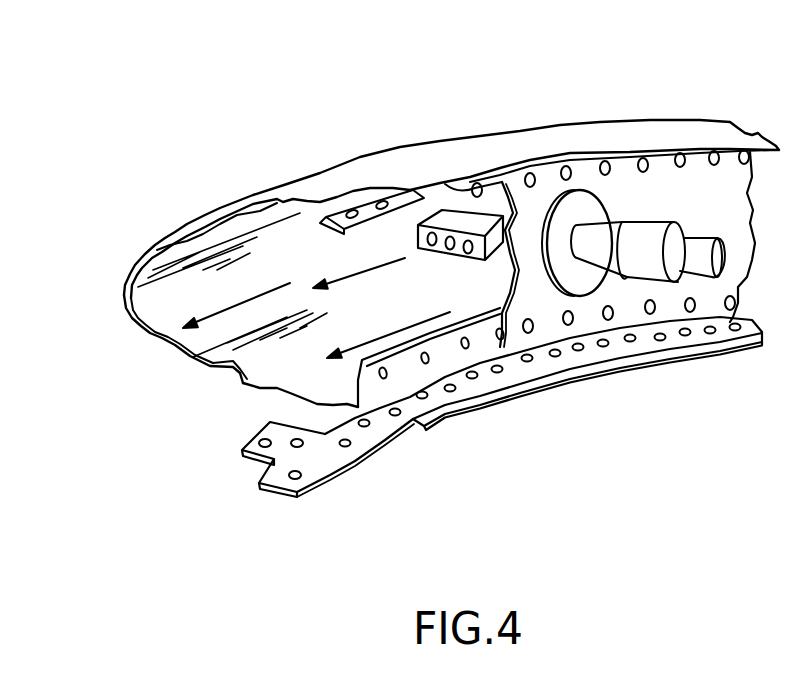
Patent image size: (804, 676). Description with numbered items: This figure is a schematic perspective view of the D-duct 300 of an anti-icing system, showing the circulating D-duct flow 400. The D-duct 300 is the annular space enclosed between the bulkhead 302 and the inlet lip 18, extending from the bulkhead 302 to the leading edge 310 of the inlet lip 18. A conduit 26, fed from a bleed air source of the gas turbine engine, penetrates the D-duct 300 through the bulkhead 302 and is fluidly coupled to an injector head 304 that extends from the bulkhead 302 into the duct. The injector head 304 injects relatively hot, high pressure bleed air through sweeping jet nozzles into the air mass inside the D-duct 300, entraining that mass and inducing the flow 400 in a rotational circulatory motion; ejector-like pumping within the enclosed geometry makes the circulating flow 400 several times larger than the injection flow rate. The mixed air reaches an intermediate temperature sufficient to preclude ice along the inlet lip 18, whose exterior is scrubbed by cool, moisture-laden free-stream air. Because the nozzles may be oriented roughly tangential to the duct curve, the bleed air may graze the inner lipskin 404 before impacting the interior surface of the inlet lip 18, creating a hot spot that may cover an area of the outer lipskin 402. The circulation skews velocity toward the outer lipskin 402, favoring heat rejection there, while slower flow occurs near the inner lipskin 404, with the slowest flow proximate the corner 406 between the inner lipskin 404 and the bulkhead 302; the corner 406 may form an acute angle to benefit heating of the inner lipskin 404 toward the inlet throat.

The D-duct 300 is at (645, 93).
The inlet lip 18 is at (330, 190).
The conduit 26 is at (652, 233).
The bulkhead 302 is at (664, 295).
The injector head 304 is at (458, 218).
The leading edge 310 is at (123, 286).
The D-duct flow 400 is at (362, 278).
The outer lipskin 402 is at (305, 212).
The inner lipskin 404 is at (240, 384).
The corner 406 is at (356, 396).